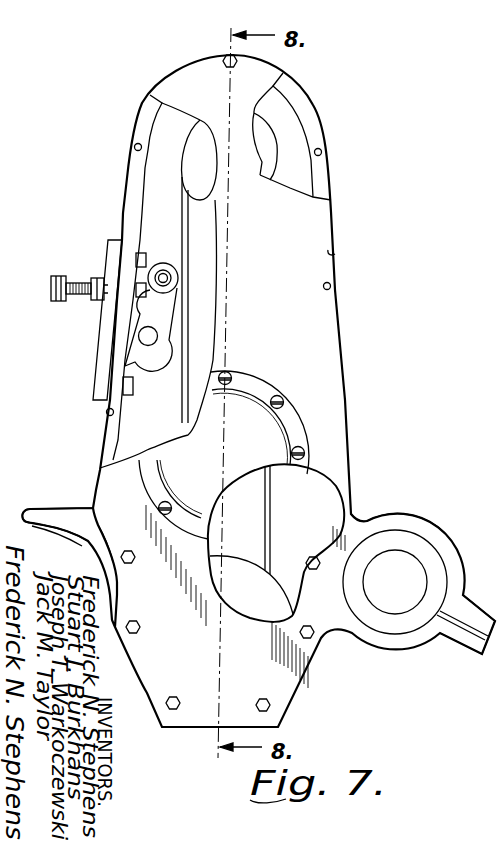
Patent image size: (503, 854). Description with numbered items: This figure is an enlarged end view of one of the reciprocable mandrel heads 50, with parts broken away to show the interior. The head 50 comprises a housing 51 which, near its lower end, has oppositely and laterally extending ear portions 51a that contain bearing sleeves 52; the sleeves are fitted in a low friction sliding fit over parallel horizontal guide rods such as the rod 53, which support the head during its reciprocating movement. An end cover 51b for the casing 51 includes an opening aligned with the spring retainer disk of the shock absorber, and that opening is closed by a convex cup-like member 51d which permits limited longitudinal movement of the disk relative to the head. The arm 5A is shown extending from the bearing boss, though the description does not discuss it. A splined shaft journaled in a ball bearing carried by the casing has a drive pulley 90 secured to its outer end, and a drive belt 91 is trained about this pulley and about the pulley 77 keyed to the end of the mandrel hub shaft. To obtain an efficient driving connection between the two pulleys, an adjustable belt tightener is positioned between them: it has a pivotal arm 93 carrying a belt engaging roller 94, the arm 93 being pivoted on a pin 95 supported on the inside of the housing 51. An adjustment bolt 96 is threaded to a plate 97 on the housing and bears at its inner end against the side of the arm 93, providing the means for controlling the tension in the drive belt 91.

The head 50 is at (258, 391).
The housing 51 is at (347, 363).
The ear portions 51a is at (44, 512).
The end cover 51b is at (336, 254).
The convex cup-like member 51d is at (293, 432).
The bearing sleeves 52 is at (430, 555).
The guide rod 53 is at (82, 546).
The arm 5A is at (410, 578).
The pulley 77 is at (206, 161).
The drive pulley 90 is at (236, 575).
The drive belt 91 is at (187, 337).
The pivotal arm 93 is at (172, 294).
The belt engaging roller 94 is at (163, 263).
The pin 95 is at (152, 346).
The adjustment bolt 96 is at (80, 296).
The plate 97 is at (108, 262).